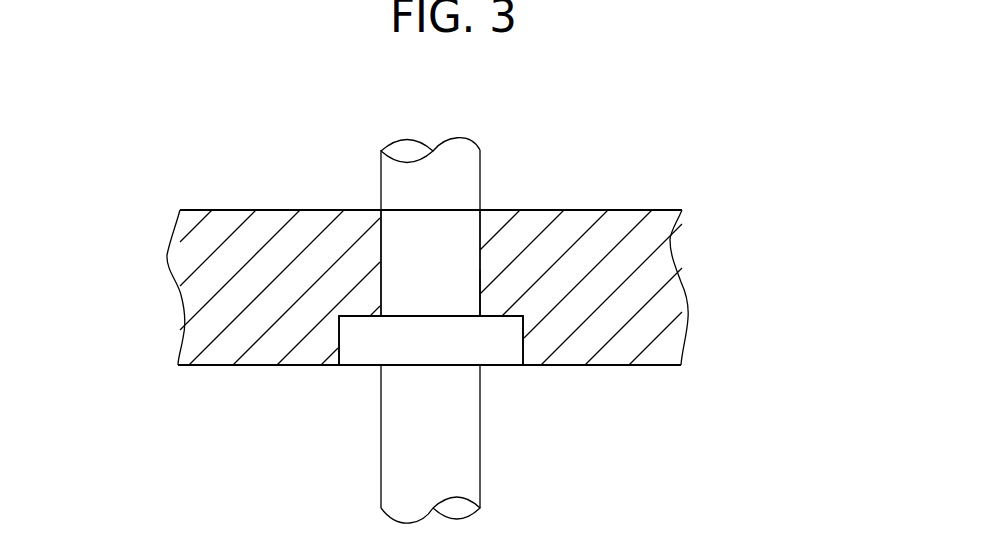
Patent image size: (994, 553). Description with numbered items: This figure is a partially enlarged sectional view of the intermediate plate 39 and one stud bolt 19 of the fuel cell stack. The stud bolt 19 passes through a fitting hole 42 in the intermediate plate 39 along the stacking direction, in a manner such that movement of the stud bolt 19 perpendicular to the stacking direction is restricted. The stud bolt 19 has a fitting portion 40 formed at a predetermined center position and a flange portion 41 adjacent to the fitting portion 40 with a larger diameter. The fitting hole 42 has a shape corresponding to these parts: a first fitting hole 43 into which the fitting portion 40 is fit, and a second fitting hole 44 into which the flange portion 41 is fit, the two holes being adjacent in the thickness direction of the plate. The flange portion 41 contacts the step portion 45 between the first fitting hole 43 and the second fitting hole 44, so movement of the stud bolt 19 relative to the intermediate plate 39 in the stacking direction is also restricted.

The stud bolt 19 is at (376, 161).
The intermediate plate 39 is at (660, 208).
The fitting portion 40 is at (381, 258).
The flange portion 41 is at (339, 339).
The fitting hole 42 is at (470, 279).
The first fitting hole 43 is at (480, 244).
The second fitting hole 44 is at (523, 348).
The step portion 45 is at (503, 316).